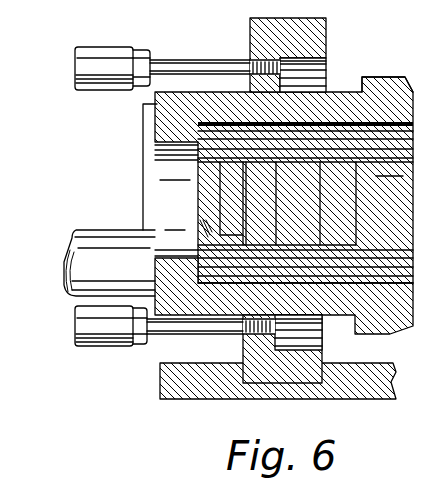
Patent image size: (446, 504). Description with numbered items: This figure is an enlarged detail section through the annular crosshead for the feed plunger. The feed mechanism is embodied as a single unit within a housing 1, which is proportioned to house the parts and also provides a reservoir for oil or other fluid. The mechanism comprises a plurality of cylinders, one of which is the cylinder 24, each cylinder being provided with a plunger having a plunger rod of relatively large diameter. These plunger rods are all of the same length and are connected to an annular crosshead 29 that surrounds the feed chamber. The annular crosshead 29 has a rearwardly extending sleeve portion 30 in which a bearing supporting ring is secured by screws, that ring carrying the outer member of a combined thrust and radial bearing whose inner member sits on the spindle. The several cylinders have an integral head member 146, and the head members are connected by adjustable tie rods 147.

The housing 1 is at (178, 399).
The cylinder 24 is at (95, 237).
The annular crosshead 29 is at (384, 79).
The rearwardly extending sleeve portion 30 is at (170, 122).
The head member 146 is at (300, 24).
The adjustable tie rod 147 is at (118, 52).